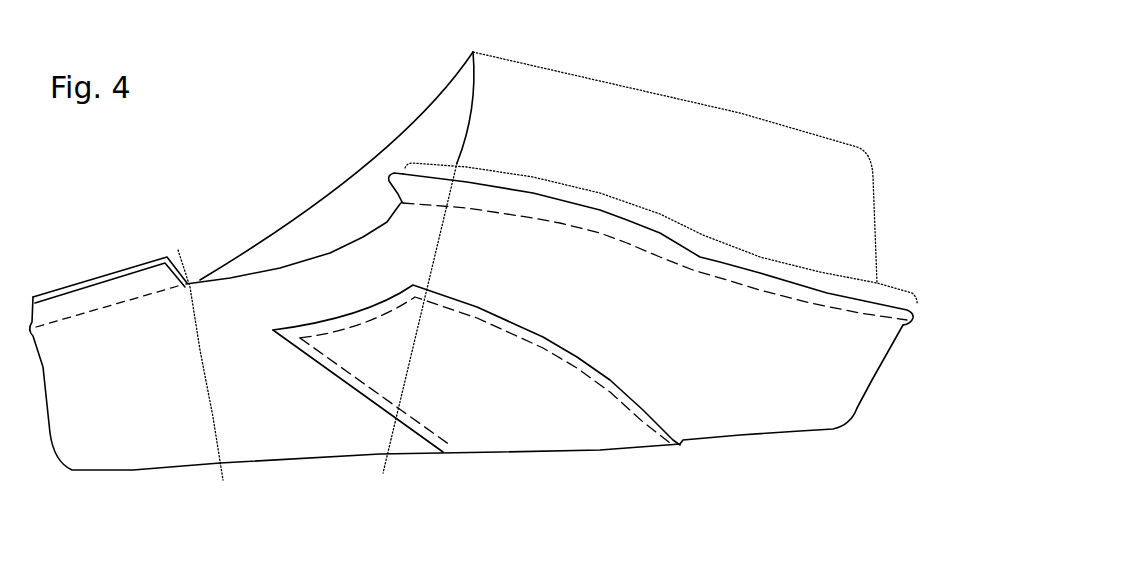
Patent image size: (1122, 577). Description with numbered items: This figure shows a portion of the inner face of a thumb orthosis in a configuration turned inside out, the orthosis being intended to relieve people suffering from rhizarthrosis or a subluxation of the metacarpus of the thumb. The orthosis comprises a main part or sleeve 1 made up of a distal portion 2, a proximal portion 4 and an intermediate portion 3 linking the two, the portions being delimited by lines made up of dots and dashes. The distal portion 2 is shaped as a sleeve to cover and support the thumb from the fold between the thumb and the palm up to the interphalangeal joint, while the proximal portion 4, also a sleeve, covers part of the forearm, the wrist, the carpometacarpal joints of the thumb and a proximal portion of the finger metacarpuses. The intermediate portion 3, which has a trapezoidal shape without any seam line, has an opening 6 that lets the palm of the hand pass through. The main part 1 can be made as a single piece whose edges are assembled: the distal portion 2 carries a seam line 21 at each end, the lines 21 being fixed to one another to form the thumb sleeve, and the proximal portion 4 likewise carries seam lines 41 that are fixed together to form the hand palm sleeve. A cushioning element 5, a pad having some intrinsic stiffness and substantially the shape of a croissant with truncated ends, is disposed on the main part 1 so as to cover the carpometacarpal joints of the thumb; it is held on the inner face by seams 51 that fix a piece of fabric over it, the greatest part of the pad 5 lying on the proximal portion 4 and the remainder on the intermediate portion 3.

The main part 1 is at (814, 116).
The distal portion 2 is at (83, 350).
The seam line 21 is at (139, 295).
The intermediate portion 3 is at (235, 307).
The proximal portion 4 is at (630, 123).
The seam line 41 is at (645, 250).
The cushioning element 5 is at (391, 347).
The seams 51 is at (583, 372).
The opening 6 is at (338, 200).